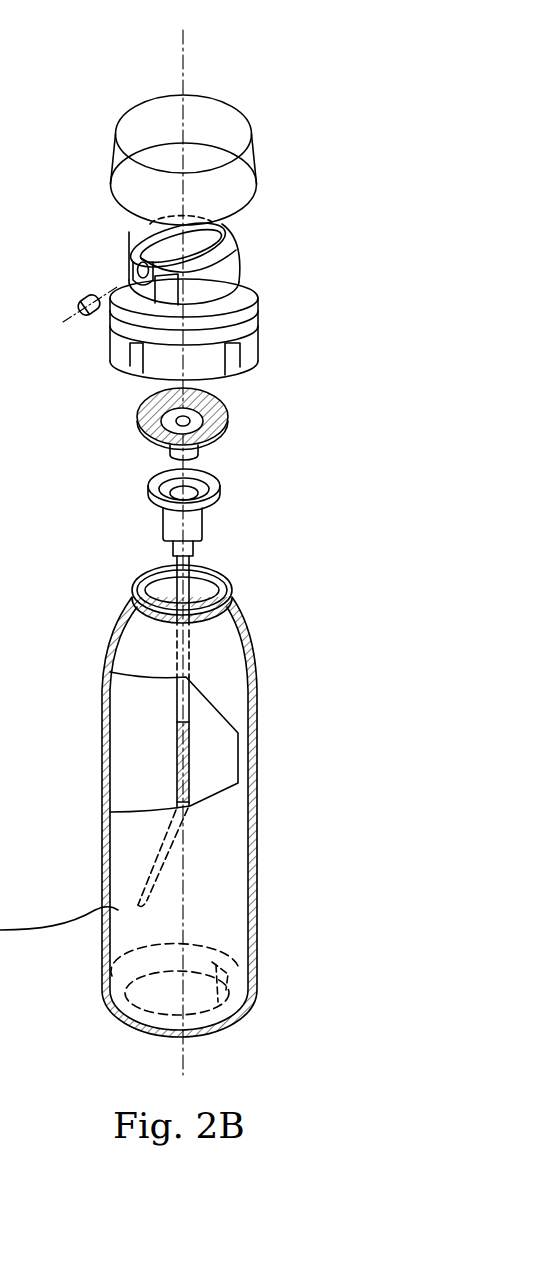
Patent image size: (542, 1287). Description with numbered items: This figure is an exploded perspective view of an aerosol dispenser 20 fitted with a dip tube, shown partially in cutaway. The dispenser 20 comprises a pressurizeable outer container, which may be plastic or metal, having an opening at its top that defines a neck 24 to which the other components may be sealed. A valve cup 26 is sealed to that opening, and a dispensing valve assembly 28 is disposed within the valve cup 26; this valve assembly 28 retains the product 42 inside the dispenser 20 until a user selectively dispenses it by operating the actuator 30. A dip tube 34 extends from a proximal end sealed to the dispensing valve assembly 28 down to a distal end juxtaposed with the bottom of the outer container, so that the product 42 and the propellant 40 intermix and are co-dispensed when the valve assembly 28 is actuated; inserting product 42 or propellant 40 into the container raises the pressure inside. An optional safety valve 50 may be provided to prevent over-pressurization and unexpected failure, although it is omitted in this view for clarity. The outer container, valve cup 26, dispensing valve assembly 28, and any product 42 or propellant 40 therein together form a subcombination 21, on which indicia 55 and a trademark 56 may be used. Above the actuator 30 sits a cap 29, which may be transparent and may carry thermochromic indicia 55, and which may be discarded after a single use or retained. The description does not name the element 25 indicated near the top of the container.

The aerosol dispenser 20 is at (275, 767).
The subcombination 21 is at (223, 725).
The neck 24 is at (220, 581).
The container neck 25 is at (252, 619).
The valve cup 26 is at (215, 478).
The dispensing valve assembly 28 is at (225, 402).
The cap 29 is at (223, 120).
The actuator 30 is at (175, 490).
The dip tube 34 is at (187, 713).
The propellant 40 is at (232, 896).
The product 42 is at (197, 925).
The safety valve 50 is at (218, 979).
The thermochromic indicia 55 is at (258, 297).
The trademark 56 is at (93, 357).